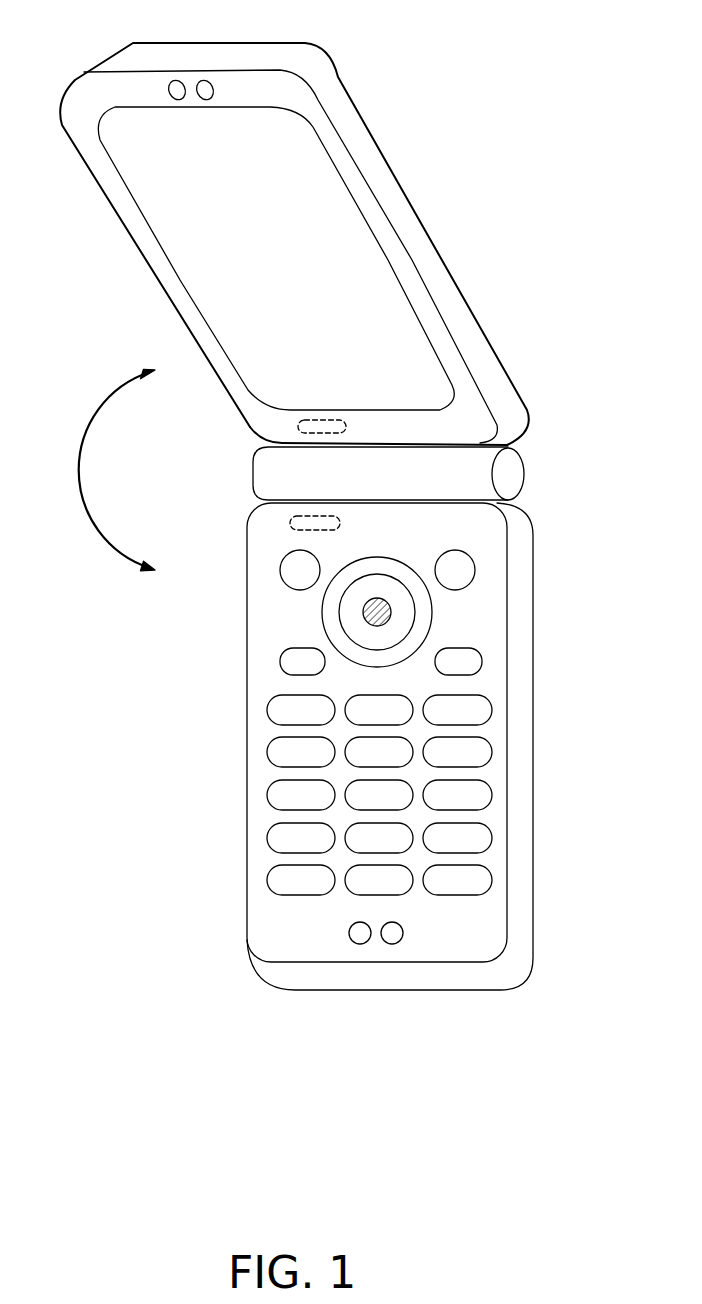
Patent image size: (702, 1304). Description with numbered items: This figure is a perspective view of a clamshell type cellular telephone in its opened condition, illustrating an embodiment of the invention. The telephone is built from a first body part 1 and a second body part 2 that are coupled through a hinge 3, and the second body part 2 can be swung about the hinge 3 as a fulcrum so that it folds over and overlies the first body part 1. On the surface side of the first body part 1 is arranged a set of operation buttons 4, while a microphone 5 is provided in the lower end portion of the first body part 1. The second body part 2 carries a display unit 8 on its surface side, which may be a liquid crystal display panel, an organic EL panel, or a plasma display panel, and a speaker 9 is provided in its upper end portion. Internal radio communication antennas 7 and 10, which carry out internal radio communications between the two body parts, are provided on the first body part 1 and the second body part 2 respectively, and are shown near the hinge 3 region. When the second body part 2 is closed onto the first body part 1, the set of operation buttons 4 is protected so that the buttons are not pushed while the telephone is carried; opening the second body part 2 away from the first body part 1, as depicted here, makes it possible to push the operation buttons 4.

The first body part 1 is at (247, 745).
The second body part 2 is at (146, 262).
The hinge 3 is at (255, 470).
The set of operation buttons 4 is at (492, 712).
The microphone 5 is at (393, 945).
The internal radio communication antenna 7 is at (290, 523).
The display unit 8 is at (345, 245).
The speaker 9 is at (186, 85).
The internal radio communication antenna 10 is at (298, 428).